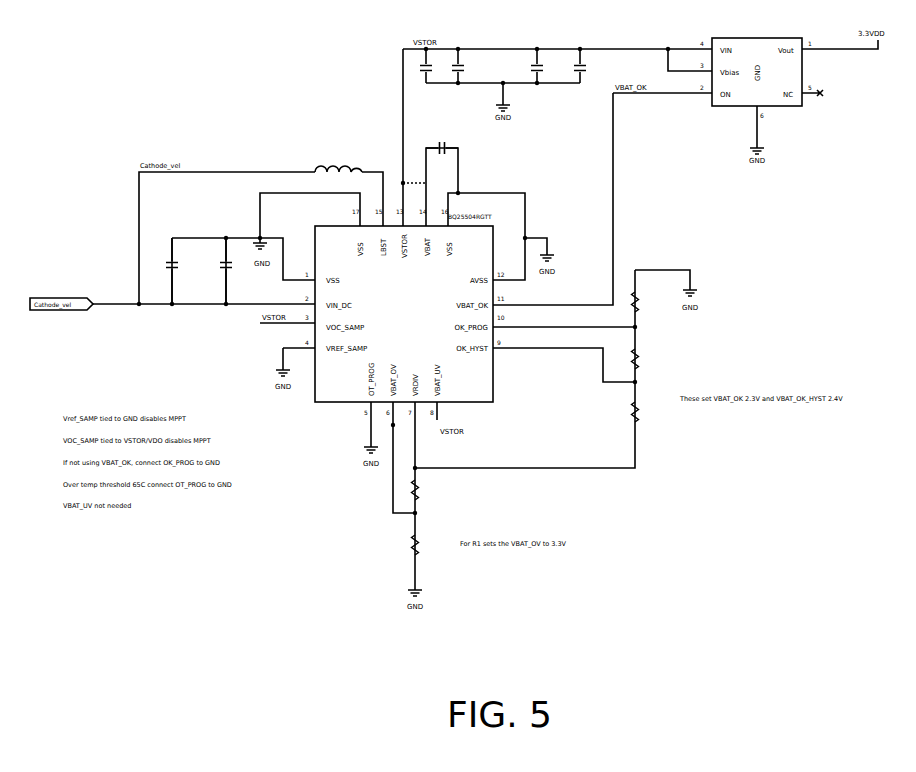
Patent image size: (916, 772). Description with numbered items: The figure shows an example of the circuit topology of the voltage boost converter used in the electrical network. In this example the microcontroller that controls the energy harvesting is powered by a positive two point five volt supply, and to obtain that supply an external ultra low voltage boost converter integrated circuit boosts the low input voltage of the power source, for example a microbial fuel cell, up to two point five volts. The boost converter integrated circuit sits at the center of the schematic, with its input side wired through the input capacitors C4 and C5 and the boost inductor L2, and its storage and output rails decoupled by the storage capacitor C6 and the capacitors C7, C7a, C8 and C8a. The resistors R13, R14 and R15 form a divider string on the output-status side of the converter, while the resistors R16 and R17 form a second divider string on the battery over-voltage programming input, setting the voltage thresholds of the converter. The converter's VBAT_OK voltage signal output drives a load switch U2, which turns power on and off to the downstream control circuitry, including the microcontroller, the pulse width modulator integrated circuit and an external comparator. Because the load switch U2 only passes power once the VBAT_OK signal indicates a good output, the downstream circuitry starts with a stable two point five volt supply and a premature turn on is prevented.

The input capacitor 0.1u C4 is at (178, 271).
The input capacitor 4.7u C5 is at (232, 271).
The battery storage capacitor 220u C6 is at (442, 155).
The VSTOR capacitor 0.1u C7 is at (432, 70).
The VSTOR capacitor 0.1u C7a is at (464, 70).
The VSTOR capacitor 4.7u C8 is at (543, 70).
The VSTOR capacitor 4.7u C8a is at (586, 70).
The boost inductor 22u L2 is at (334, 157).
The VBAT_OK programming resistor R13 is at (646, 301).
The VBAT_OK programming resistor R14 is at (646, 358).
The VBAT_OK programming resistor R15 is at (644, 411).
The VBAT_OV programming resistor R16 is at (426, 490).
The VBAT_OV programming resistor R17 is at (424, 545).
The load switch TPS22860 U2 is at (756, 85).